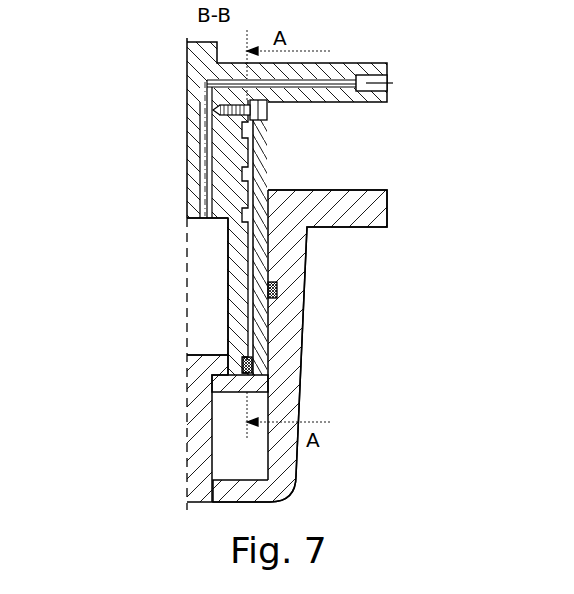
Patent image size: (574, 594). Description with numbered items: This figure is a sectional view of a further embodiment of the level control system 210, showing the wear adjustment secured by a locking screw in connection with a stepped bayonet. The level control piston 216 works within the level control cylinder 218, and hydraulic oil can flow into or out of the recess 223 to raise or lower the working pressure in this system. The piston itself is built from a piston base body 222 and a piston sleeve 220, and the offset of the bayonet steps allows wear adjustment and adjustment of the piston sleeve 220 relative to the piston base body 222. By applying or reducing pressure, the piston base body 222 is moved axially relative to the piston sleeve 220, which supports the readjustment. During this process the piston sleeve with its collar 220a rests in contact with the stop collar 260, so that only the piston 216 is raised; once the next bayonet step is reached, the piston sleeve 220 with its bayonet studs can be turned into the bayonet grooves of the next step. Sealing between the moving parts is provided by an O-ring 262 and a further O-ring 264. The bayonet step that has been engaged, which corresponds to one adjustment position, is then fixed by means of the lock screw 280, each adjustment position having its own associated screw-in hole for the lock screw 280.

The level control system 210 is at (58, 40).
The level control piston 216 is at (187, 112).
The level control cylinder 218 is at (378, 205).
The piston sleeve 220 is at (258, 150).
The collar 220a is at (212, 383).
The piston base body 222 is at (353, 67).
The recess 223 is at (197, 287).
The stop collar 260 is at (205, 362).
The O-ring 262 is at (278, 289).
The O-ring 264 is at (253, 365).
The lock screw 280 is at (263, 107).